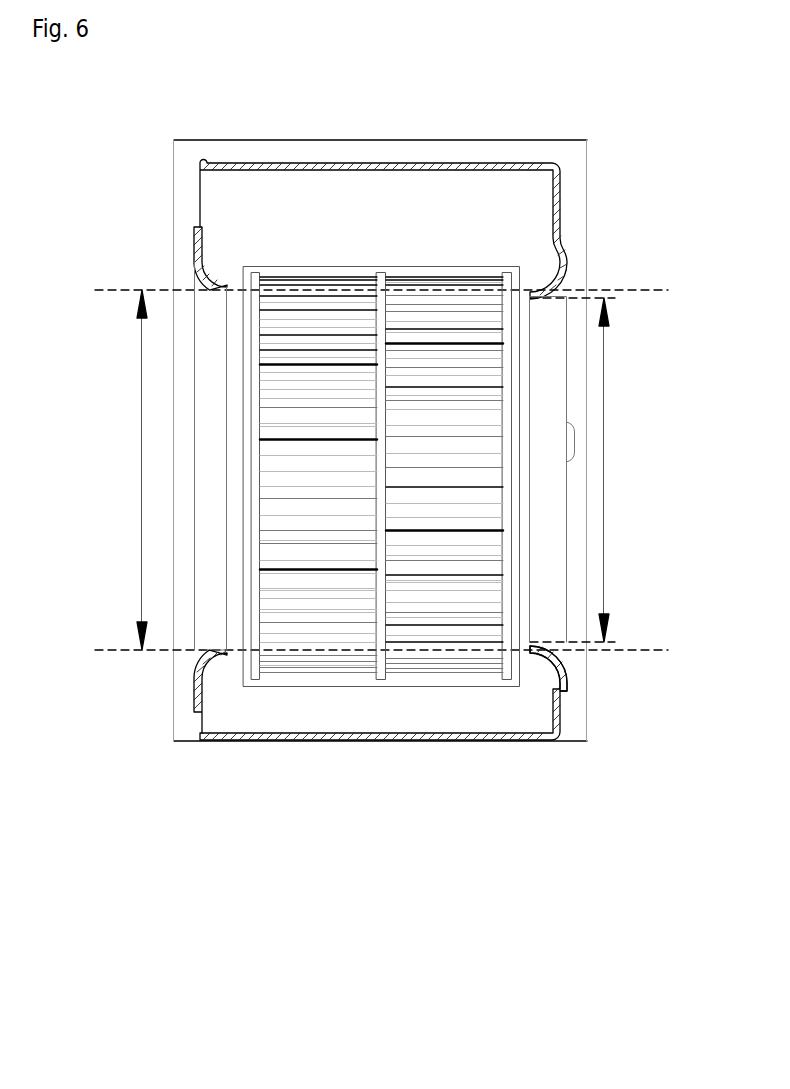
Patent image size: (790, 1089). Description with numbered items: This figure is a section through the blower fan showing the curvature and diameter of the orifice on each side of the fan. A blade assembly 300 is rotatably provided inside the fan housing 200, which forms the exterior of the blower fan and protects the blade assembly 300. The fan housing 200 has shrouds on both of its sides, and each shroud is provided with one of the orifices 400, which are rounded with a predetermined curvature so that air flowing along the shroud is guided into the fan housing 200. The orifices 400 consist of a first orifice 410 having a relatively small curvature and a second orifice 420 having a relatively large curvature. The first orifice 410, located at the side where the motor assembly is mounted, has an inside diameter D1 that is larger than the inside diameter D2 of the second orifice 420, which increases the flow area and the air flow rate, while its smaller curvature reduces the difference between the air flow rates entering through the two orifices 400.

The fan housing 200 is at (315, 162).
The blade assembly 300 is at (408, 250).
The orifices 400 is at (380, 785).
The first orifice 410 is at (207, 665).
The second orifice 420 is at (545, 650).
The inside diameter of the first orifice D1 is at (142, 481).
The inside diameter of the second orifice D2 is at (604, 486).